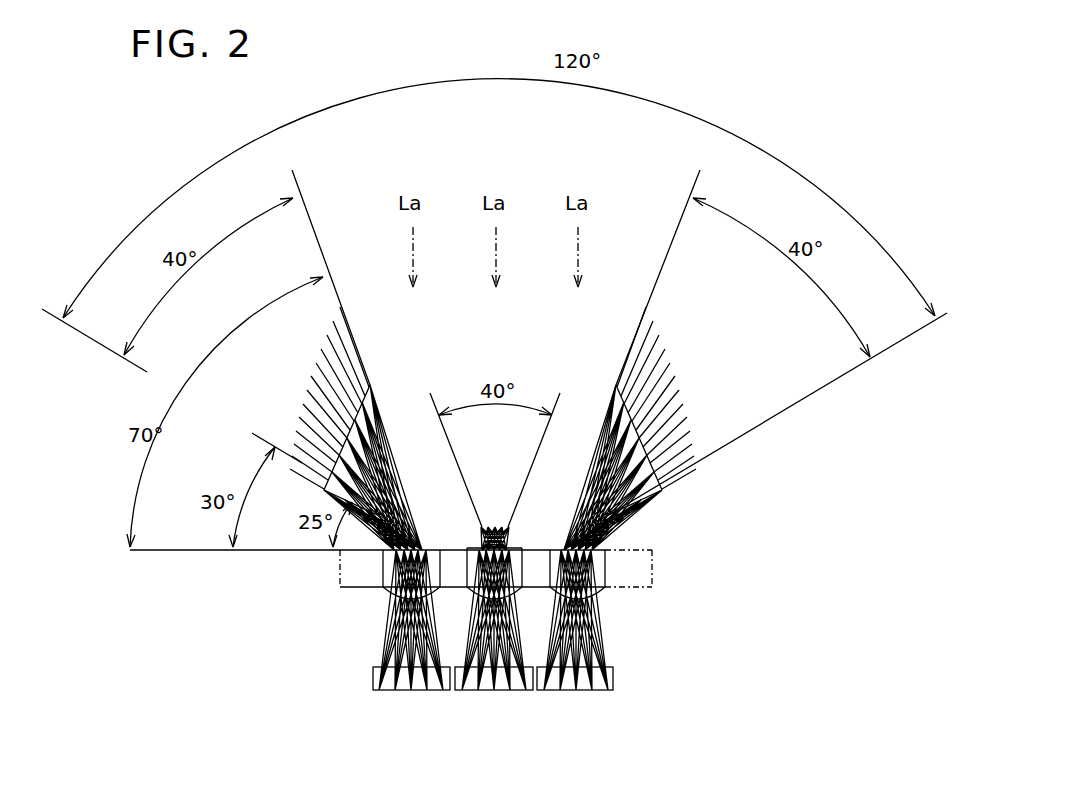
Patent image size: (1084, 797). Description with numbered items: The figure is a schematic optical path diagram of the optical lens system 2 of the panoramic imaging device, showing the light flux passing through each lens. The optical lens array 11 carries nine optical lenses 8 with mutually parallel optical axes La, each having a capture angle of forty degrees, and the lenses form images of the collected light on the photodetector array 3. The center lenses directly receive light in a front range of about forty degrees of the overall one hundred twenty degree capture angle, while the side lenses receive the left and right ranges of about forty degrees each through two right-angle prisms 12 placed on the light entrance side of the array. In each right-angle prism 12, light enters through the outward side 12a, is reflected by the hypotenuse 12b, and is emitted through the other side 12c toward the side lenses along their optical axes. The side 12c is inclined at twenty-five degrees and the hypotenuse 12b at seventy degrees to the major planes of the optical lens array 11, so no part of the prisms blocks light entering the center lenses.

The optical lens system 2 is at (752, 494).
The photodetector array 3 is at (613, 680).
The optical lenses 8 is at (470, 550).
The optical lens array 11 is at (340, 572).
The right-angle prism 12 is at (330, 430).
The outward side 12a is at (645, 437).
The hypotenuse 12b is at (603, 410).
The side 12c is at (635, 505).